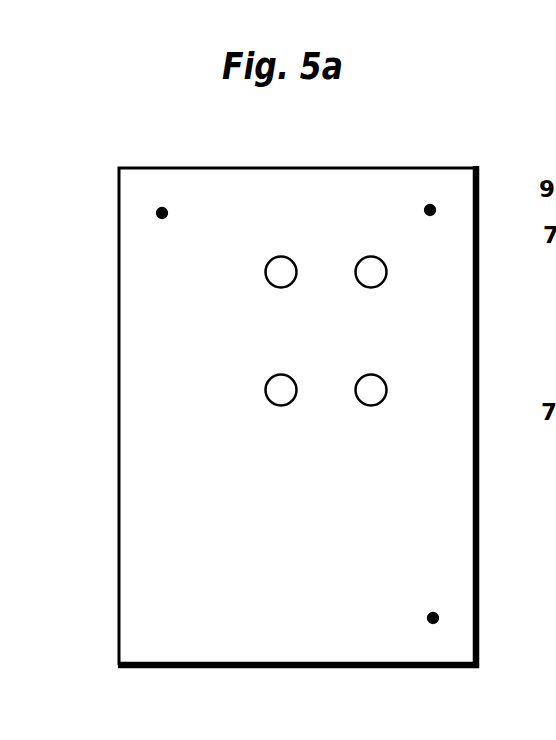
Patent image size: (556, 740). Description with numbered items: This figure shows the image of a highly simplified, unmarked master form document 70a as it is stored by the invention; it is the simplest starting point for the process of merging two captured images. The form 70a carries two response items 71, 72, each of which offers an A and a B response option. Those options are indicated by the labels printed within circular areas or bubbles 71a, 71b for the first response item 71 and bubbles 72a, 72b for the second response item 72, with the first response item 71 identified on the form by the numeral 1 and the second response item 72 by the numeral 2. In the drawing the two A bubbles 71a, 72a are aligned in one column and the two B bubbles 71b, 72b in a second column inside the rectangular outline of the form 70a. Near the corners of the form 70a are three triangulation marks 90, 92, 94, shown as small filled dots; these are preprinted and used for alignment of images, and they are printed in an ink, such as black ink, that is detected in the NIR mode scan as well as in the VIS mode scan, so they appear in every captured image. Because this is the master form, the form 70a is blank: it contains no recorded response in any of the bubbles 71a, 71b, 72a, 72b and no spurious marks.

The master form document 70a is at (231, 168).
The response item 71 is at (177, 277).
The row number one 1 is at (186, 275).
The bubble 71a is at (286, 257).
The bubble 71b is at (385, 278).
The response item 72 is at (175, 398).
The row number two 2 is at (186, 397).
The bubble 72a is at (272, 404).
The bubble 72b is at (385, 397).
The triangulation mark 90 is at (162, 213).
The triangulation mark 92 is at (430, 210).
The triangulation mark 94 is at (433, 618).